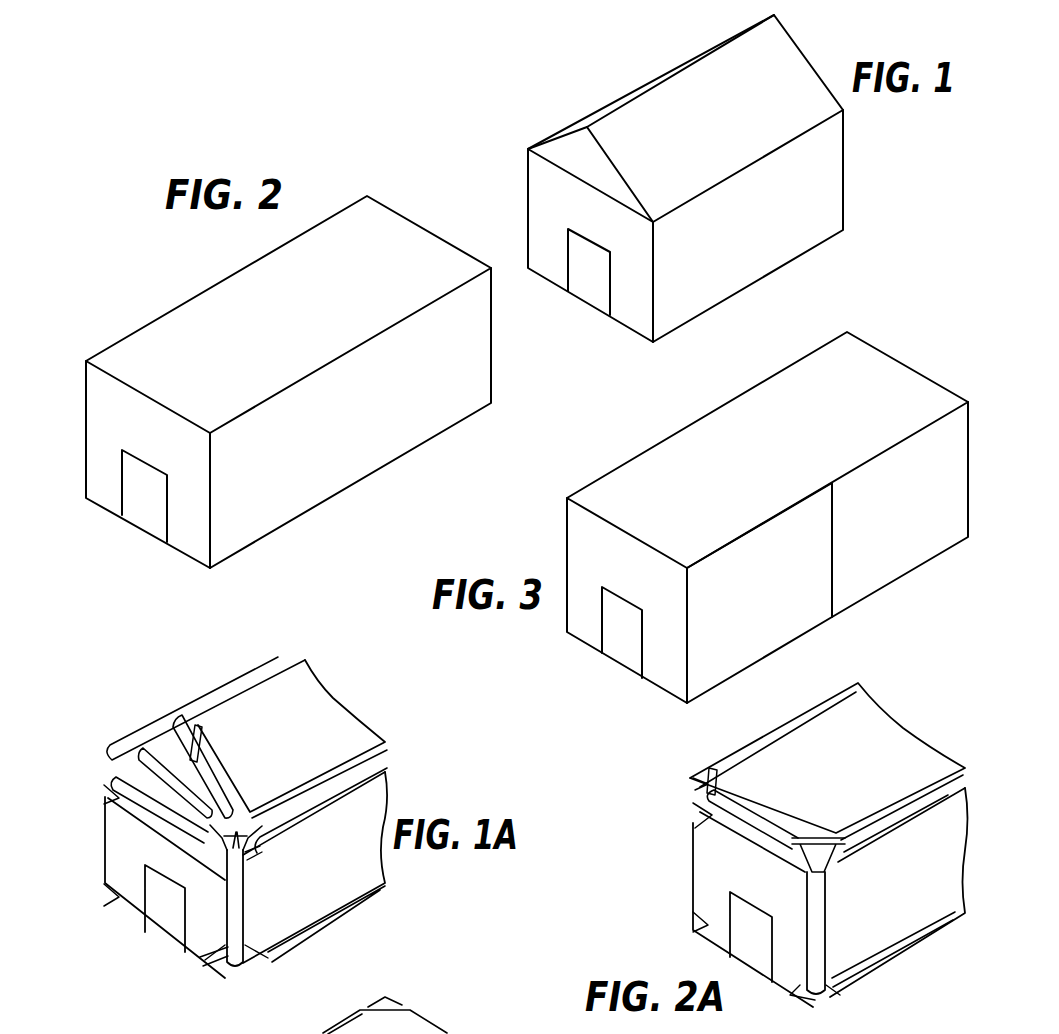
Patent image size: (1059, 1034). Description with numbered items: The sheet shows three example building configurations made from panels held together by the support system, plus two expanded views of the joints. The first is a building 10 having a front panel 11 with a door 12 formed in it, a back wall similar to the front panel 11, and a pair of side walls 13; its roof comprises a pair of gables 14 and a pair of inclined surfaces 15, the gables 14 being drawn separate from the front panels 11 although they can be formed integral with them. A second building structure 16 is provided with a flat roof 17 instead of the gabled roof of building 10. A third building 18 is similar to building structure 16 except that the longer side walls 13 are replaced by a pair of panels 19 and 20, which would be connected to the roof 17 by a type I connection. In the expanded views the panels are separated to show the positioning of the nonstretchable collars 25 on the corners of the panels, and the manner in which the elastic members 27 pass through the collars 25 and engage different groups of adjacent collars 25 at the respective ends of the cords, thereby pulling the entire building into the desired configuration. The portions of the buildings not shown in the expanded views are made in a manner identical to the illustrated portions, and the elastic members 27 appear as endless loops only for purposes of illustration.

In FIG. 1, the building 10 is at (570, 97).
In FIG. 1, the front panel 11 is at (563, 205).
In FIG. 2, the front panel 11 is at (151, 438).
In FIG. 3, the front panel 11 is at (638, 583).
In FIG. 1A, the front panel 11 is at (173, 863).
In FIG. 2A, the front panel 11 is at (738, 881).
In FIG. 1, the door 12 is at (601, 275).
In FIG. 2, the door 12 is at (154, 504).
In FIG. 3, the door 12 is at (632, 645).
In FIG. 1A, the door 12 is at (176, 923).
In FIG. 2A, the door 12 is at (757, 944).
In FIG. 1, the side wall 13 is at (765, 241).
In FIG. 2, the side wall 13 is at (381, 428).
In FIG. 1A, the side wall 13 is at (339, 891).
In FIG. 2A, the side wall 13 is at (911, 893).
In FIG. 1, the gable 14 is at (591, 169).
In FIG. 1A, the gable 14 is at (168, 783).
In FIG. 1, the inclined surface 15 is at (726, 131).
In FIG. 1A, the inclined surface 15 is at (308, 739).
In FIG. 2, the building structure 16 is at (114, 317).
In FIG. 2, the flat roof 17 is at (312, 326).
In FIG. 3, the flat roof 17 is at (782, 473).
In FIG. 2A, the flat roof 17 is at (851, 783).
In FIG. 3, the building 18 is at (621, 450).
In FIG. 3, the panel 19 is at (778, 611).
In FIG. 3, the panel 20 is at (912, 529).
In FIG. 1A, the collar 25 is at (240, 812).
In FIG. 2A, the collar 25 is at (702, 810).
In FIG. 1A, the elastic member 27 is at (333, 807).
In FIG. 2A, the elastic member 27 is at (798, 873).